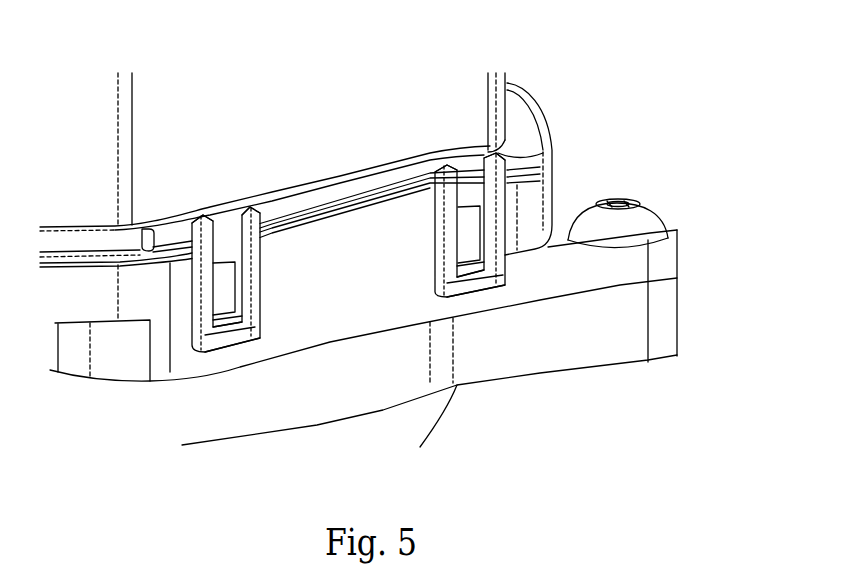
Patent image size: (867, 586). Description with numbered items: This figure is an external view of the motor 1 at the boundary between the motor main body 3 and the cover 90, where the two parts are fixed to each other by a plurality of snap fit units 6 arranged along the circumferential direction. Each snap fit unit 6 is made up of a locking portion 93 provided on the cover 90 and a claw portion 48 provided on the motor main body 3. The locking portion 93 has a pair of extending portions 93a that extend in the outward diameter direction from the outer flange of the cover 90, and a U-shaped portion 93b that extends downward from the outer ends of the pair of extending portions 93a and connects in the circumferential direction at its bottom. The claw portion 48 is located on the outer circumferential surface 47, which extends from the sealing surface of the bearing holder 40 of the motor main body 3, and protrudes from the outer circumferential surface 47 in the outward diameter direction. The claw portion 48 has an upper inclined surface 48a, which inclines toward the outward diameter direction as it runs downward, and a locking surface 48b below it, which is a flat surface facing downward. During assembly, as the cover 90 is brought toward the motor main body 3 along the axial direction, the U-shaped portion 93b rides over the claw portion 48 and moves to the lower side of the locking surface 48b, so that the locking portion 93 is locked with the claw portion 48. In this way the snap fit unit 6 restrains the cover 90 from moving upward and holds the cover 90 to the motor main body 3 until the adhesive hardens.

The motor 1 is at (638, 74).
The motor main body 3 is at (569, 155).
The snap fit unit 6 is at (380, 295).
The bearing holder 40 is at (560, 191).
The outer circumferential surface 47 is at (353, 288).
The claw portion 48 is at (245, 340).
The upper inclined surface 48a is at (225, 289).
The locking surface 48b is at (237, 338).
The cover 90 is at (516, 77).
The locking portion 93 is at (255, 206).
The extending portion 93a is at (193, 235).
The U-shaped portion 93b is at (226, 343).